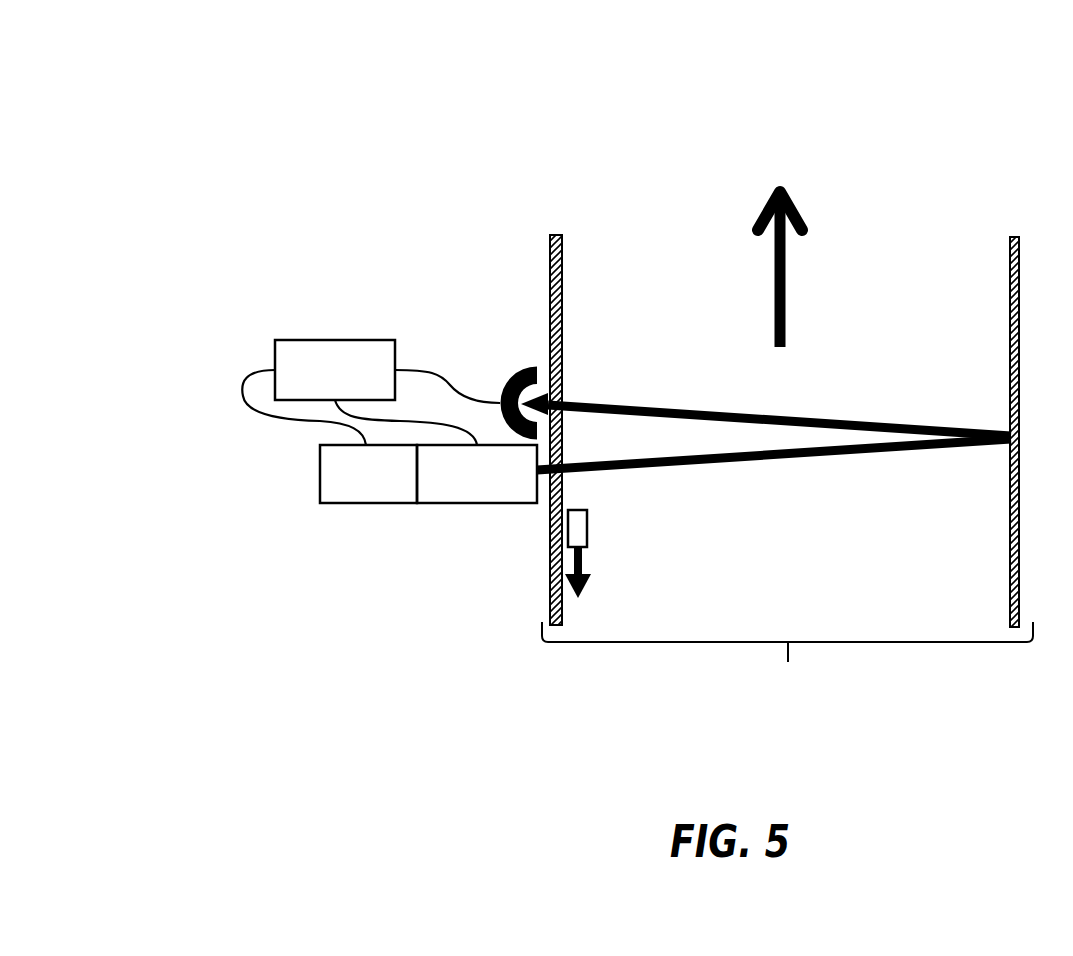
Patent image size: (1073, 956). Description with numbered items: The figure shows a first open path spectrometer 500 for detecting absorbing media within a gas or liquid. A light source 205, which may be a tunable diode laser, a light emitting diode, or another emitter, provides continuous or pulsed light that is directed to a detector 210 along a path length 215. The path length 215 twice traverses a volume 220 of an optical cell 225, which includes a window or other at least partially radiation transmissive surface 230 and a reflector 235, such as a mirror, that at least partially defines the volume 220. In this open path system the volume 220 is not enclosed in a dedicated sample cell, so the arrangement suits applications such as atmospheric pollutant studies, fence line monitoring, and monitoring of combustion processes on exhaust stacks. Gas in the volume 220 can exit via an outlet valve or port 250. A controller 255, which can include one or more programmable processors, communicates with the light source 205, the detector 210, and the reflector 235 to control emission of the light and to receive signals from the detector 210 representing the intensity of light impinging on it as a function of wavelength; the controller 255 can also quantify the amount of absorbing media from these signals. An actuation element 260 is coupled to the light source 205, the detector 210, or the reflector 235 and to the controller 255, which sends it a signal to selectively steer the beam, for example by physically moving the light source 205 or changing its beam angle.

The first open path spectrometer 500 is at (266, 92).
The light source 205 is at (460, 488).
The detector 210 is at (515, 360).
The path length 215 is at (846, 441).
The volume 220 is at (728, 501).
The optical cell 225 is at (787, 660).
The radiation transmissive surface 230 is at (546, 507).
The reflector 235 is at (1012, 232).
The outlet valve or port 250 is at (562, 529).
The controller 255 is at (318, 383).
The actuation element 260 is at (351, 488).